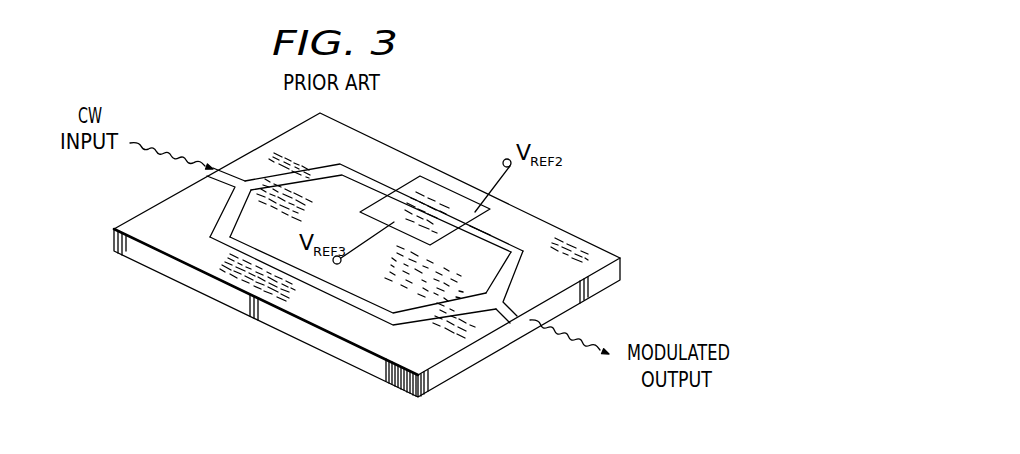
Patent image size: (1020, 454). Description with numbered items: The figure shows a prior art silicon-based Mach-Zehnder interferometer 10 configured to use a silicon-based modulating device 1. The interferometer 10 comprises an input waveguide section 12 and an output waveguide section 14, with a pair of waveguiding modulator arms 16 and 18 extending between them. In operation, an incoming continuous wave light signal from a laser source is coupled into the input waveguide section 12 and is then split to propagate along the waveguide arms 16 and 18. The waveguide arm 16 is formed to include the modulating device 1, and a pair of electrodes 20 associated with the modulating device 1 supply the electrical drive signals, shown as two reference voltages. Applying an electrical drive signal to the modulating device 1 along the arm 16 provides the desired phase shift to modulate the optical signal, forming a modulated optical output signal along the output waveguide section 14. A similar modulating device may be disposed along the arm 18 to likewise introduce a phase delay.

The silicon-based Mach-Zehnder interferometer 10 is at (640, 150).
The input waveguide section 12 is at (228, 178).
The output waveguide section 14 is at (512, 312).
The waveguiding modulator arm 16 is at (320, 170).
The waveguiding modulator arm 18 is at (348, 298).
The electrodes 20 is at (370, 209).
The modulating device 1 is at (486, 211).